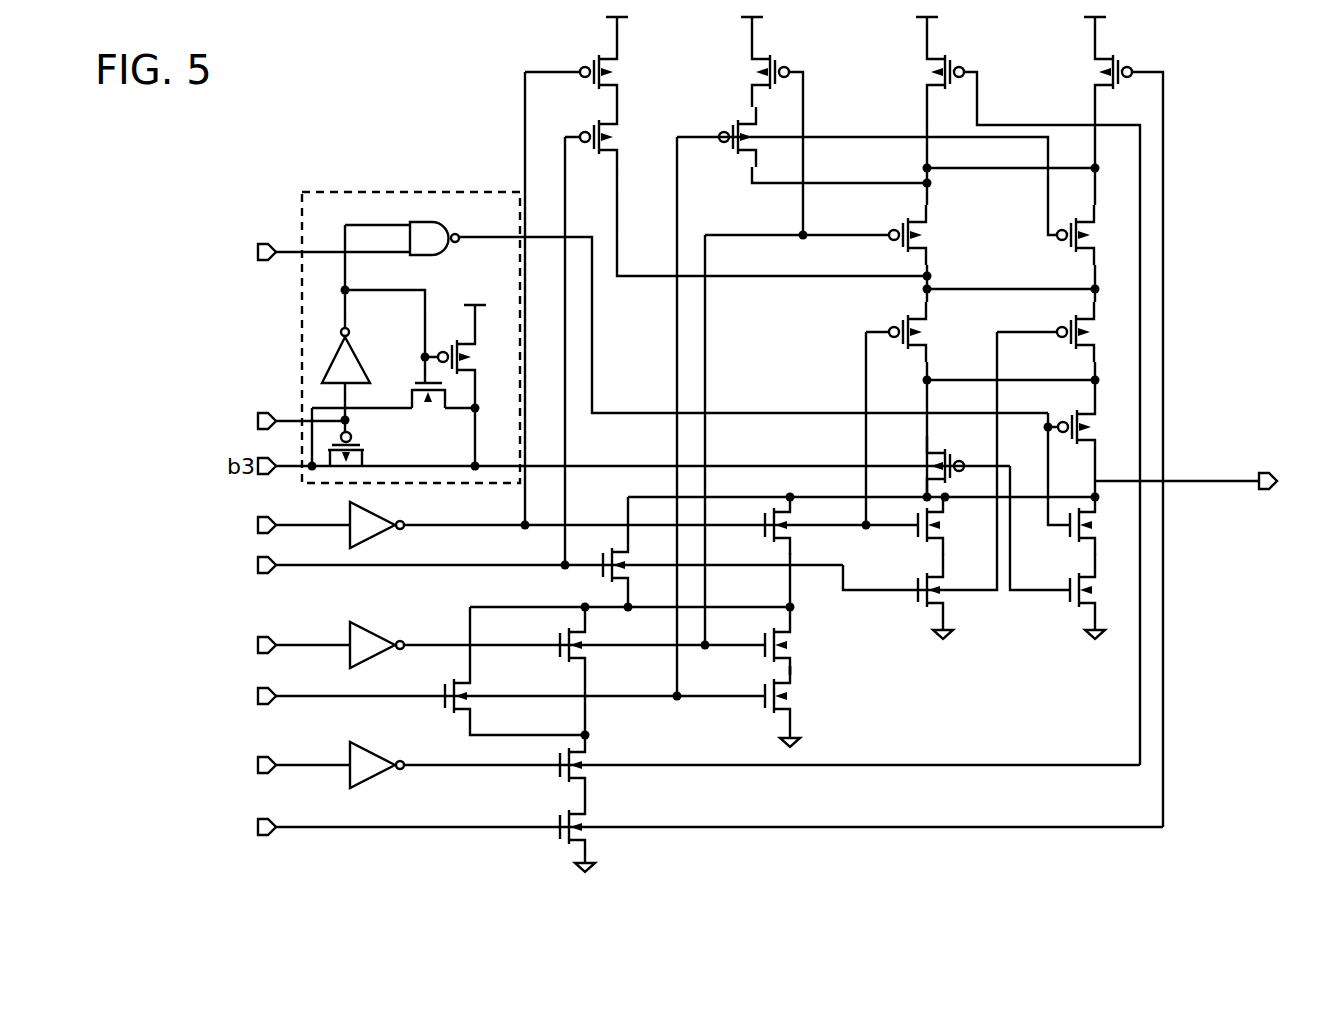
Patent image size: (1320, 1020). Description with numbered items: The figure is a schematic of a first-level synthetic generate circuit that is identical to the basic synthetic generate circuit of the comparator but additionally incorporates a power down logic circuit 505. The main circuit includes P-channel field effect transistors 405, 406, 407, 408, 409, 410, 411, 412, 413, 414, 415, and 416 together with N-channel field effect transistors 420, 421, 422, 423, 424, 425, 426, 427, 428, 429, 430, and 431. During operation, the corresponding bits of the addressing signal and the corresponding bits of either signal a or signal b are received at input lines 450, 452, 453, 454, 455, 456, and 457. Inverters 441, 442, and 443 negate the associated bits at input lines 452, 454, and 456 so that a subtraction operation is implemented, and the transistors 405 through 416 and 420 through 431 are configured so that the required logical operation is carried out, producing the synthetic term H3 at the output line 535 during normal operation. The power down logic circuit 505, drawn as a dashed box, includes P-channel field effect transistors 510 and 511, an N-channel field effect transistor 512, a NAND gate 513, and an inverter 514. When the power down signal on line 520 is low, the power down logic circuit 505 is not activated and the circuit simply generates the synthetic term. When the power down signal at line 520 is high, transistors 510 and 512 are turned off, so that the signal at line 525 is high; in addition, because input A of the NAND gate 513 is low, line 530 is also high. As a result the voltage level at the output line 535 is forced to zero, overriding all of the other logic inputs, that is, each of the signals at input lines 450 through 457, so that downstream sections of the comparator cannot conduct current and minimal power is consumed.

The P-channel field effect transistor 405 is at (611, 73).
The P-channel field effect transistor 406 is at (611, 138).
The P-channel field effect transistor 407 is at (760, 72).
The P-channel field effect transistor 408 is at (748, 138).
The P-channel field effect transistor 409 is at (931, 72).
The P-channel field effect transistor 410 is at (921, 236).
The P-channel field effect transistor 411 is at (921, 333).
The P-channel field effect transistor 412 is at (937, 466).
The P-channel field effect transistor 413 is at (1099, 72).
The P-channel field effect transistor 414 is at (1089, 236).
The P-channel field effect transistor 415 is at (1089, 333).
The P-channel field effect transistor 416 is at (1090, 428).
The N-channel field effect transistor 420 is at (468, 696).
The N-channel field effect transistor 421 is at (582, 645).
The N-channel field effect transistor 422 is at (582, 765).
The N-channel field effect transistor 423 is at (582, 827).
The N-channel field effect transistor 424 is at (625, 565).
The N-channel field effect transistor 425 is at (787, 525).
The N-channel field effect transistor 426 is at (787, 645).
The N-channel field effect transistor 427 is at (787, 696).
The N-channel field effect transistor 428 is at (940, 525).
The N-channel field effect transistor 429 is at (940, 590).
The N-channel field effect transistor 430 is at (1092, 525).
The N-channel field effect transistor 431 is at (1092, 590).
The inverter 441 is at (372, 513).
The inverter 442 is at (373, 634).
The inverter 443 is at (373, 754).
The input line 450 is at (291, 252).
The input line 452 is at (285, 525).
The input line 453 is at (285, 565).
The input line 454 is at (285, 645).
The input line 455 is at (285, 696).
The input line 456 is at (285, 765).
The input line 457 is at (285, 827).
The power down logic circuit 505 is at (352, 192).
The P-channel field effect transistor 510 is at (352, 446).
The P-channel field effect transistor 511 is at (466, 358).
The N-channel field effect transistor 512 is at (418, 382).
The NAND gate 513 is at (440, 222).
The inverter 514 is at (360, 364).
The power down signal line 520 is at (296, 421).
The signal line 525 is at (590, 466).
The NAND output line 530 is at (593, 352).
The output line 535 is at (1200, 481).